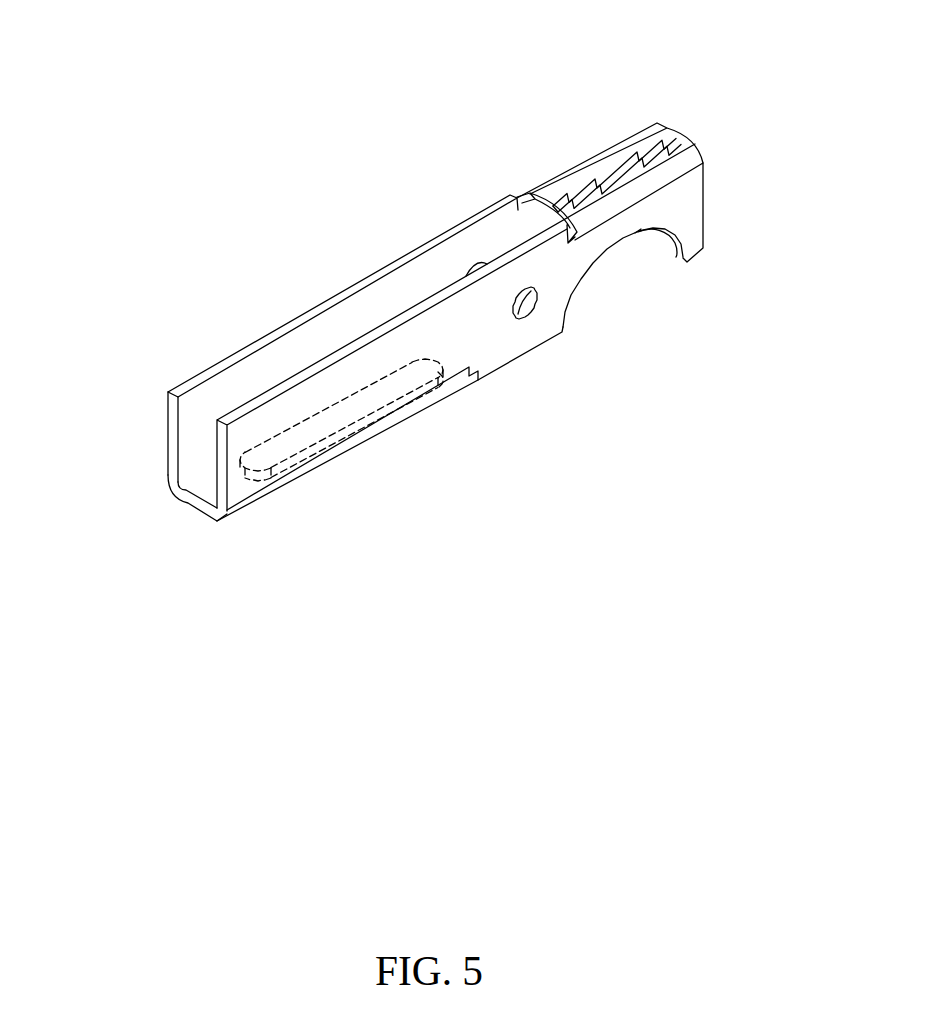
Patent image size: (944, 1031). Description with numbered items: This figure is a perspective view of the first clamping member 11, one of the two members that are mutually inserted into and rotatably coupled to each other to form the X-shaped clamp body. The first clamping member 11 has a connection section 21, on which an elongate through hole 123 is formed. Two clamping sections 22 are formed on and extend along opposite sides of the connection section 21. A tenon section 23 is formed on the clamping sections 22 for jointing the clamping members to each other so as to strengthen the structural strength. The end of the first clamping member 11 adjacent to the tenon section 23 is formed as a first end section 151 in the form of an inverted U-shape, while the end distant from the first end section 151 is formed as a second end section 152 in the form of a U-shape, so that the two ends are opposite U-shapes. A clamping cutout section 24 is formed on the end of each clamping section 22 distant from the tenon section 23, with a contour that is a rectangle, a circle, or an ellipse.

The first clamping member 11 is at (472, 176).
The connection section 21 is at (188, 507).
The clamping sections 22 is at (192, 377).
The tenon section 23 is at (612, 168).
The clamping cutout section 24 is at (587, 277).
The elongate through hole 123 is at (350, 372).
The first end section 151 is at (706, 120).
The second end section 152 is at (168, 460).